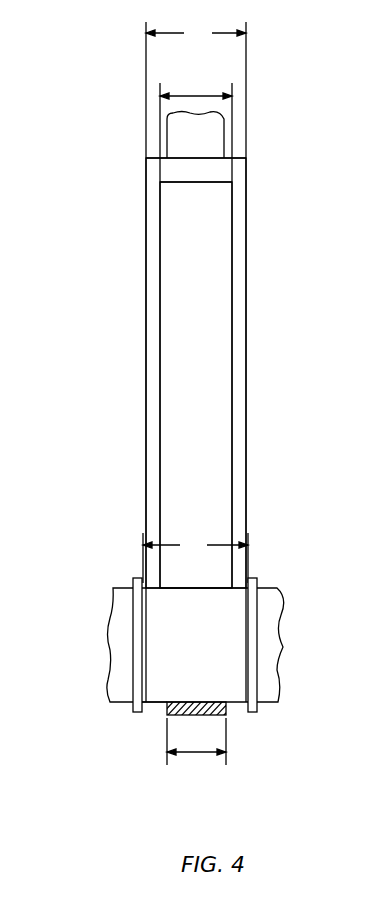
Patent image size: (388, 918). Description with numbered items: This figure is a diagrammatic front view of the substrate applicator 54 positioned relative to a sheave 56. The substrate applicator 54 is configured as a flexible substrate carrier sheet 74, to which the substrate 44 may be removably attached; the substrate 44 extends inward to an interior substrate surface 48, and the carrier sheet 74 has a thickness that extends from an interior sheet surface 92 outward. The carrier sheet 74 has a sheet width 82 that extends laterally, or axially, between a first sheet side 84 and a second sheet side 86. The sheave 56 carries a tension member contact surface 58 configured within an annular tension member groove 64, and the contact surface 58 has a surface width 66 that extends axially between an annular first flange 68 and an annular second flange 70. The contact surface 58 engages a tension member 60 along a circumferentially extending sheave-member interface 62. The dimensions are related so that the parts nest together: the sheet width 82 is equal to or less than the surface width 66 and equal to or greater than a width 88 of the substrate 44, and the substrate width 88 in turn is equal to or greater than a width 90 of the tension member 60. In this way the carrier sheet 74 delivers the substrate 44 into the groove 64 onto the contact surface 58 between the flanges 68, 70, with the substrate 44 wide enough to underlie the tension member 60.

The substrate 44 is at (232, 327).
The interior substrate surface 48 is at (172, 340).
The substrate applicator 54 is at (263, 418).
The sheave 56 is at (287, 603).
The tension member contact surface 58 is at (155, 692).
The tension member 60 is at (210, 147).
The sheave-member interface 62 is at (232, 707).
The annular tension member groove 64 is at (230, 675).
The surface width 66 is at (195, 558).
The first flange 68 is at (132, 712).
The second flange 70 is at (258, 708).
The substrate carrier sheet 74 is at (238, 172).
The sheet width 82 is at (196, 89).
The first sheet side 84 is at (146, 237).
The second sheet side 86 is at (246, 243).
The substrate width 88 is at (197, 95).
The tension member width 90 is at (197, 753).
The interior sheet surface 92 is at (152, 183).